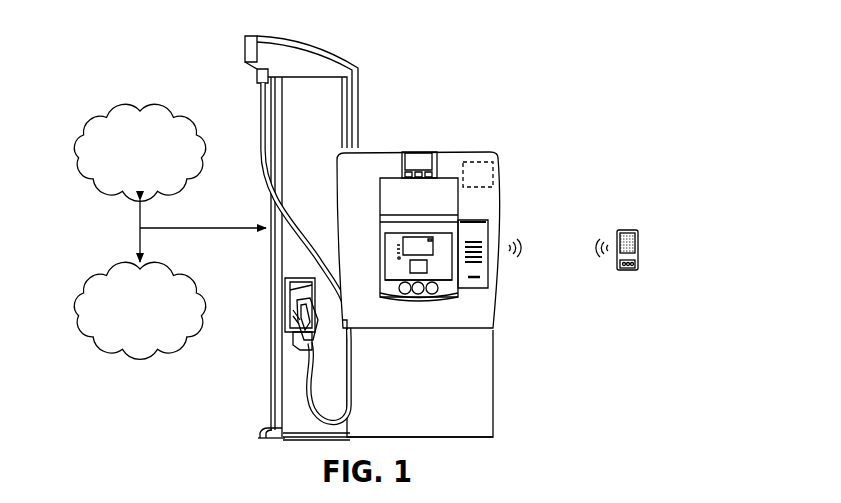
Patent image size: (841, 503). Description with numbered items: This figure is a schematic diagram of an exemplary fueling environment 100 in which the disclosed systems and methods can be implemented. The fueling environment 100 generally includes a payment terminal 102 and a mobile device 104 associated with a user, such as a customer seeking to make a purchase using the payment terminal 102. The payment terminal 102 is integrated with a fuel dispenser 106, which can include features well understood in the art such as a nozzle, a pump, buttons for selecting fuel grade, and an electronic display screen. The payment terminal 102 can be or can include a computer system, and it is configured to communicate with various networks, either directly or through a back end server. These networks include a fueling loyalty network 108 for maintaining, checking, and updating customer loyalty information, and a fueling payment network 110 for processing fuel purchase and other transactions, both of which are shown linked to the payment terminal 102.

The fueling environment 100 is at (186, 84).
The payment terminal 102 is at (441, 111).
The mobile device 104 is at (648, 271).
The fuel dispenser 106 is at (297, 171).
The fueling loyalty network 108 is at (94, 289).
The fueling payment network 110 is at (94, 129).